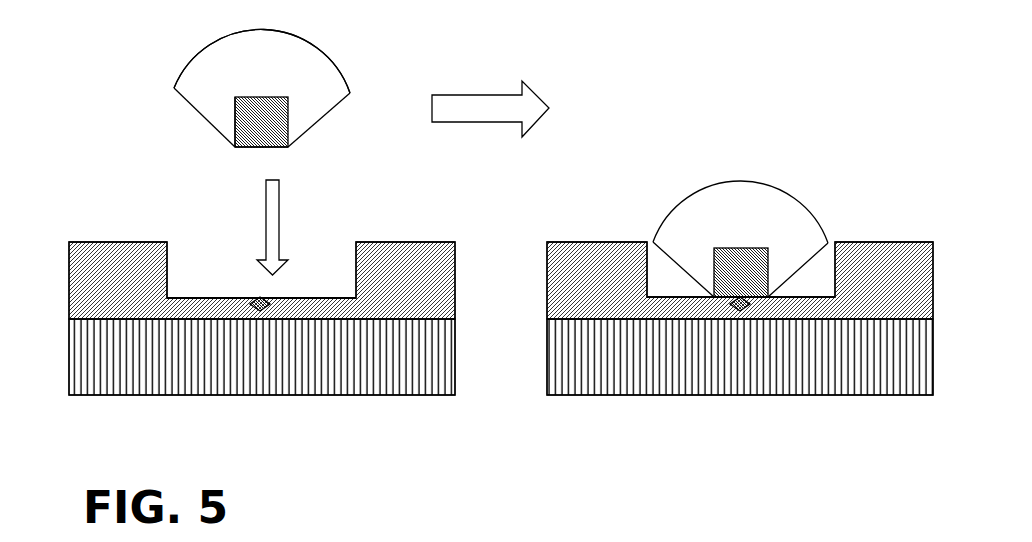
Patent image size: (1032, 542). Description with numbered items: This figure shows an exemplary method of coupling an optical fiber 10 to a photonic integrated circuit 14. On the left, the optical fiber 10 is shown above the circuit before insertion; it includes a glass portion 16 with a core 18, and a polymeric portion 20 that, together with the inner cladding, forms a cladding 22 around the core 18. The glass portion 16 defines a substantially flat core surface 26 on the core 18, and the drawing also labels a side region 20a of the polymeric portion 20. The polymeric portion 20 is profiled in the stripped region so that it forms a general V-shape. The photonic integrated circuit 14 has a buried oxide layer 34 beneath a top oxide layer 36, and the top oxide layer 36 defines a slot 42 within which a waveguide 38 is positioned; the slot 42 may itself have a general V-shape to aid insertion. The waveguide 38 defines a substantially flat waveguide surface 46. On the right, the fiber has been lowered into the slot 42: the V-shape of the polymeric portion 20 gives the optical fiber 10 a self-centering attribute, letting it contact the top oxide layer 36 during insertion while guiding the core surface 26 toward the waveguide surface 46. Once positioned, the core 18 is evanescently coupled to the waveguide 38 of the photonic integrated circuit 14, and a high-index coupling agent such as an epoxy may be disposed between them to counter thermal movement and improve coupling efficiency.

The optical fiber 10 is at (697, 176).
The photonic integrated circuit 14 is at (246, 320).
The glass portion 16 is at (296, 102).
The core 18 is at (235, 110).
The polymeric portion 20 is at (280, 93).
The outer side surface of lens 20a is at (330, 112).
The cladding 22 is at (210, 55).
The core surface 26 is at (281, 149).
The buried oxide layer 34 is at (92, 337).
The top oxide layer 36 is at (120, 250).
The waveguide 38 is at (260, 308).
The slot 42 is at (203, 240).
The waveguide surface 46 is at (262, 300).